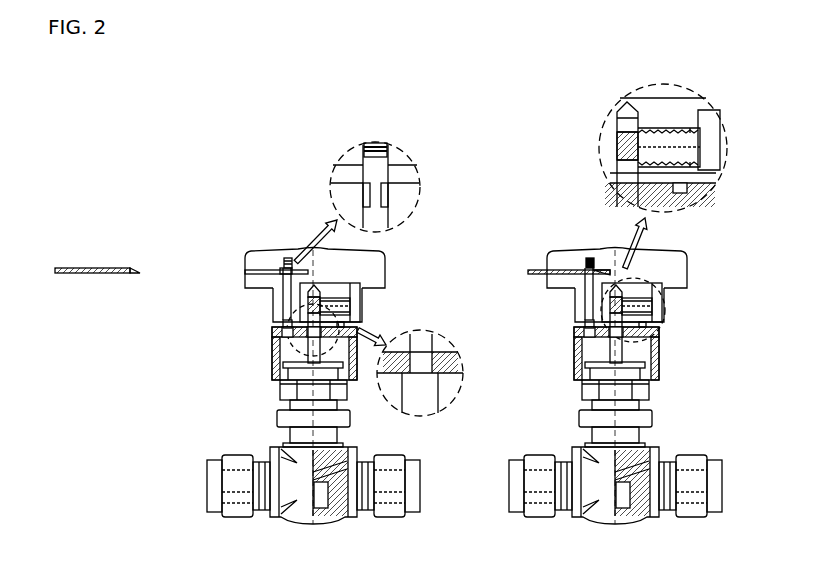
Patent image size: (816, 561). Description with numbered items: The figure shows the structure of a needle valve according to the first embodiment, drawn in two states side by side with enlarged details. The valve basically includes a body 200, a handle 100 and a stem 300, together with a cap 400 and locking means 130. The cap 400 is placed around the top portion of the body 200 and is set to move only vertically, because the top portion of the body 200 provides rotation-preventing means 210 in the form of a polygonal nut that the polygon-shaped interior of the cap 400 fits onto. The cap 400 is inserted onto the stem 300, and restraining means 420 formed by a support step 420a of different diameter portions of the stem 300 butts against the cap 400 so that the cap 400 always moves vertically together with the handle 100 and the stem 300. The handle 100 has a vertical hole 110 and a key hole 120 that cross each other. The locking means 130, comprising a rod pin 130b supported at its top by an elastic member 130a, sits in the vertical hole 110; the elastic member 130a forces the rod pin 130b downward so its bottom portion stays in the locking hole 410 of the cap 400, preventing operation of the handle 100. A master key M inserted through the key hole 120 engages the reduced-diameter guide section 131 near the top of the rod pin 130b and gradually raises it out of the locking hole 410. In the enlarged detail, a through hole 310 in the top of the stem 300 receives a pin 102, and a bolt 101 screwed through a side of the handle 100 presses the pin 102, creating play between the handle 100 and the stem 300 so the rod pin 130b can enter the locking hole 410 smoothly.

The handle 100 is at (386, 268).
The bolt 101 is at (670, 138).
The pin 102 is at (617, 152).
The vertical hole 110 is at (279, 311).
The key hole 120 is at (262, 270).
The locking means 130 is at (287, 257).
The elastic member 130a is at (246, 272).
The rod pin 130b is at (286, 298).
The guide section 131 is at (386, 196).
The body 200 is at (283, 460).
The rotation-preventing means 210 is at (283, 388).
The stem 300 is at (289, 338).
The through hole 310 is at (617, 130).
The cap 400 is at (273, 350).
The locking hole 410 is at (361, 325).
The restraining means 420 is at (463, 372).
The support step 420a is at (461, 384).
The master key M is at (78, 268).